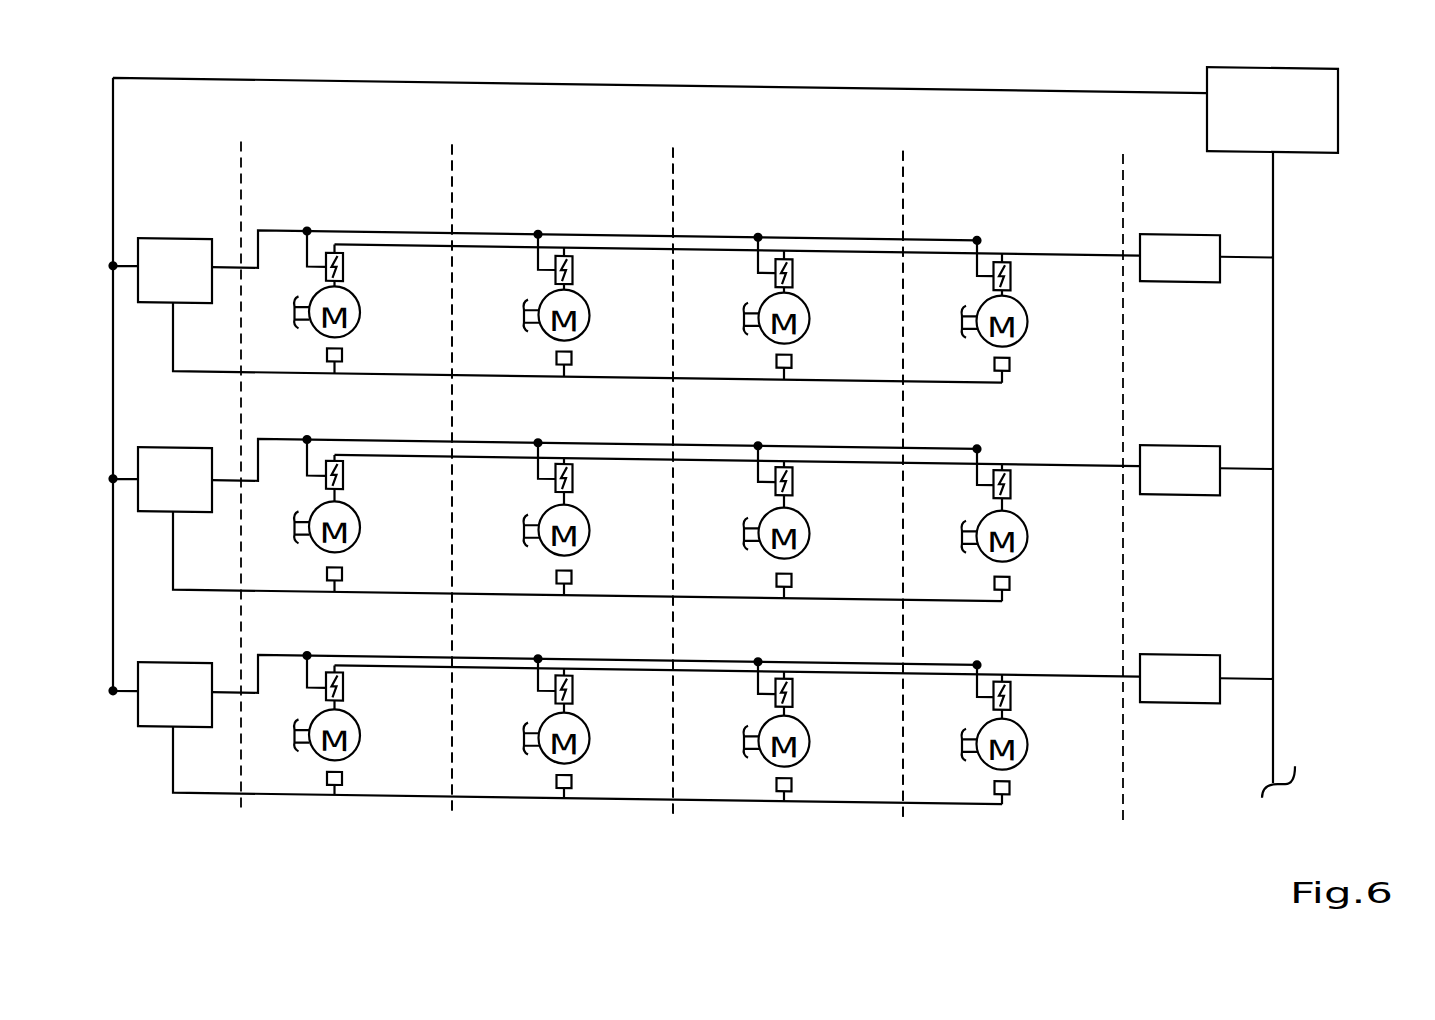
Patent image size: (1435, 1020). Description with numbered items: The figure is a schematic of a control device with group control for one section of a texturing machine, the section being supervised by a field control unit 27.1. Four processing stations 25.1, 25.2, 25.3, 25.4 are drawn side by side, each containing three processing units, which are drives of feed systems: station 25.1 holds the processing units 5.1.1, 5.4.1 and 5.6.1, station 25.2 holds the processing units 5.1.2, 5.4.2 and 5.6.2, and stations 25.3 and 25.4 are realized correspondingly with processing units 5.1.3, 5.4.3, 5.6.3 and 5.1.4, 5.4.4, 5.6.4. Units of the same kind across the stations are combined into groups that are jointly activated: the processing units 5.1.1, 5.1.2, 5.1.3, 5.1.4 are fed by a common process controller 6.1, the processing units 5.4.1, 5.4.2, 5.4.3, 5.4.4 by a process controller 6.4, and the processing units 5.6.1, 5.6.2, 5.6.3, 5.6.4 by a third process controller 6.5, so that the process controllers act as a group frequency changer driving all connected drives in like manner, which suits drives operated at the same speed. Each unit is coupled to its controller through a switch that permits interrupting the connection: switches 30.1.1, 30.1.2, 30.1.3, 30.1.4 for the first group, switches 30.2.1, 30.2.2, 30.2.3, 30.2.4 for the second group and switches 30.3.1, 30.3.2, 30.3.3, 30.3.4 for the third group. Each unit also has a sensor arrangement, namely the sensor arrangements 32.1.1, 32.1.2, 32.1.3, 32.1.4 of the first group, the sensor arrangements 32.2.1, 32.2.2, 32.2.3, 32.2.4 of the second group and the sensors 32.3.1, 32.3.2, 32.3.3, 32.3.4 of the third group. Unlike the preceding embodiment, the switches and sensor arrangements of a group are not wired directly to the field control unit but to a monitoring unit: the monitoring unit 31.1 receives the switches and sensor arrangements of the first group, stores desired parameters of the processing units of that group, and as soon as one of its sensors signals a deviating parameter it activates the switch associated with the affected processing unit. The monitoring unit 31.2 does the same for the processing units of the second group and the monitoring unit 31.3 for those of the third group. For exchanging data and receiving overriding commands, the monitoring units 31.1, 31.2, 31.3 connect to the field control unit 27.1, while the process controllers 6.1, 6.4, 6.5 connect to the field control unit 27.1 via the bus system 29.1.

The field control unit 27.1 is at (1304, 128).
The bus system 29.1 is at (1275, 359).
The monitoring unit 31.1 is at (175, 270).
The monitoring unit 31.2 is at (175, 479).
The monitoring unit 31.3 is at (175, 694).
The process controller 6.1 is at (1180, 258).
The process controller 6.4 is at (1180, 470).
The bus interface unit 6.5 is at (1180, 678).
The processing station 25.1 is at (378, 866).
The processing station 25.2 is at (622, 866).
The processing station 25.3 is at (833, 866).
The processing station 25.4 is at (1060, 867).
The switch 30.1.1 is at (368, 257).
The switch 30.1.2 is at (598, 261).
The switch 30.1.3 is at (818, 264).
The switch 30.1.4 is at (1037, 267).
The switch 30.2.1 is at (368, 469).
The switch 30.2.2 is at (598, 472).
The switch 30.2.3 is at (818, 475).
The switch 30.2.4 is at (1037, 478).
The switch 30.3.1 is at (368, 681).
The switch 30.3.2 is at (598, 684).
The switch 30.3.3 is at (818, 687).
The switch 30.3.4 is at (1037, 690).
The processing unit 5.1.1 is at (363, 312).
The processing unit 5.1.2 is at (592, 315).
The processing unit 5.1.3 is at (812, 318).
The processing unit 5.1.4 is at (1034, 321).
The processing unit 5.4.1 is at (363, 527).
The processing unit 5.4.2 is at (592, 530).
The processing unit 5.4.3 is at (812, 533).
The processing unit 5.4.4 is at (1034, 536).
The processing unit 5.6.1 is at (363, 735).
The processing unit 5.6.2 is at (592, 738).
The processing unit 5.6.3 is at (812, 741).
The processing unit 5.6.4 is at (1034, 744).
The sensor arrangement 32.1.1 is at (379, 356).
The sensor arrangement 32.1.2 is at (609, 359).
The sensor arrangement 32.1.3 is at (829, 362).
The sensor arrangement 32.1.4 is at (1047, 365).
The sensor arrangement 32.2.1 is at (379, 575).
The sensor arrangement 32.2.2 is at (609, 578).
The sensor arrangement 32.2.3 is at (829, 581).
The sensor arrangement 32.2.4 is at (1047, 584).
The sensor 32.3.1 is at (379, 778).
The sensor 32.3.2 is at (609, 781).
The sensor 32.3.3 is at (829, 785).
The sensor 32.3.4 is at (1047, 788).